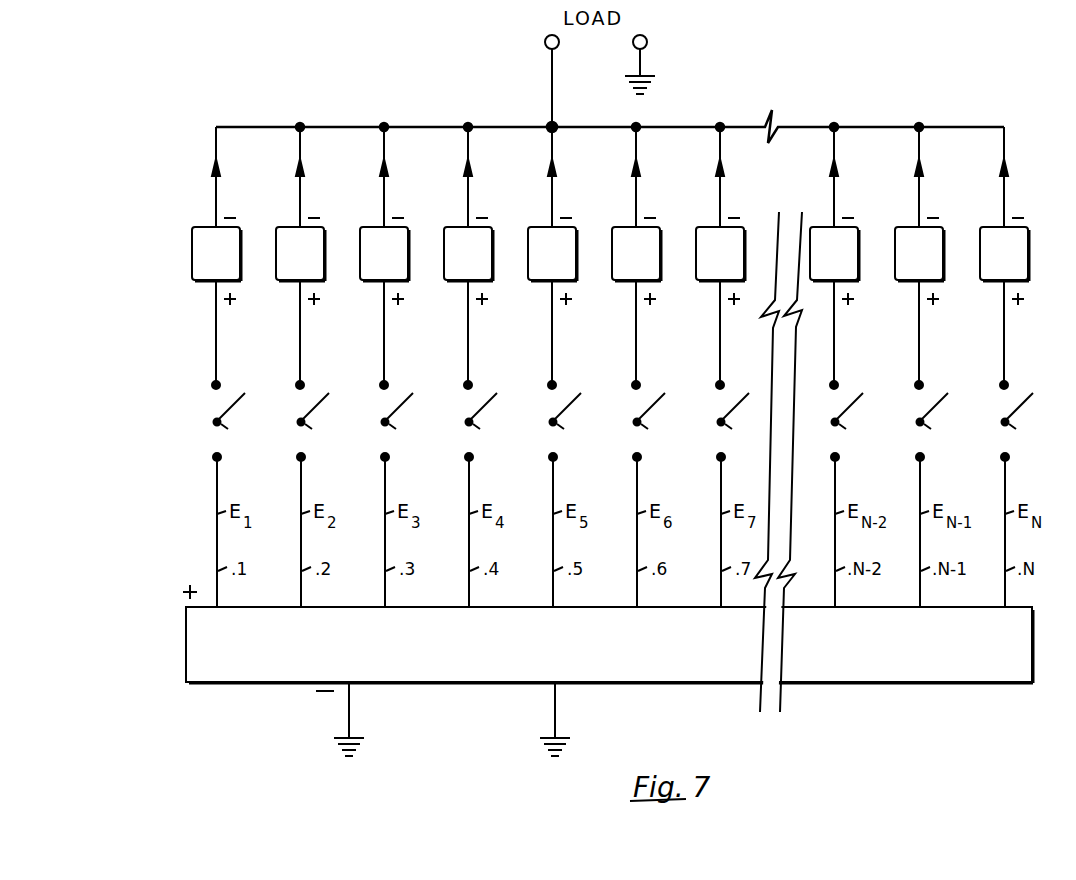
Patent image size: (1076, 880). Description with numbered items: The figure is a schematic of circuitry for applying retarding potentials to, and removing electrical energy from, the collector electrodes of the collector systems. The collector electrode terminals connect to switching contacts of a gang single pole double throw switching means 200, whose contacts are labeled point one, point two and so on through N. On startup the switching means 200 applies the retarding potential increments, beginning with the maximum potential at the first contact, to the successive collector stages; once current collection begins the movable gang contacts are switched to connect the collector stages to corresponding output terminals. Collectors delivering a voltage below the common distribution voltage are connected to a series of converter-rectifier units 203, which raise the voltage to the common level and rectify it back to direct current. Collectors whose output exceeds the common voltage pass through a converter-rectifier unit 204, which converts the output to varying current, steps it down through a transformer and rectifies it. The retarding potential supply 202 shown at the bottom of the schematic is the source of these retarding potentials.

The gang single pole double throw switching means 200 is at (190, 422).
The retarding potential supply 202 is at (608, 670).
The converter-rectifier units 203 is at (468, 261).
The converter-rectifier unit 204 is at (919, 261).